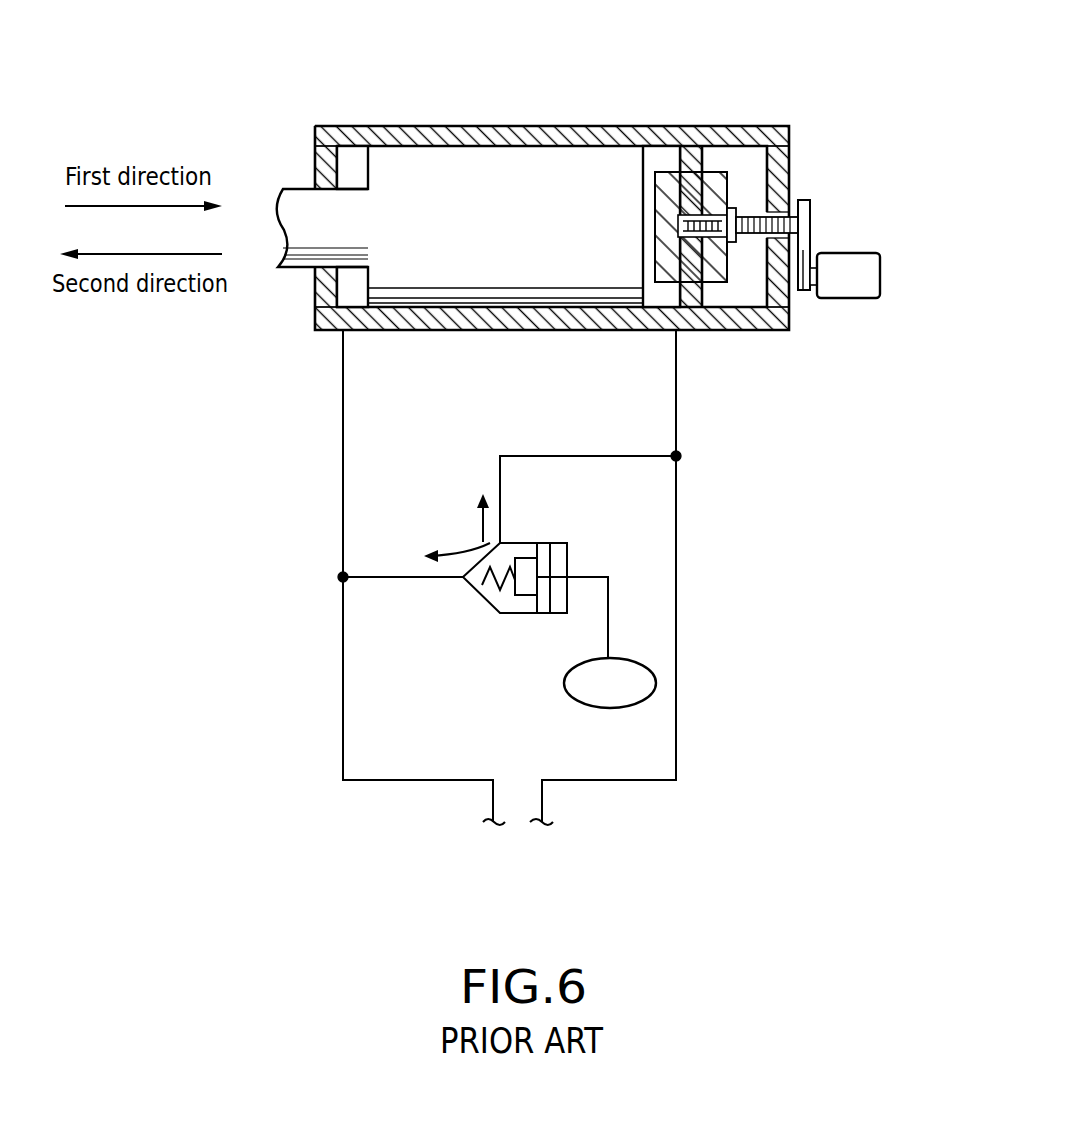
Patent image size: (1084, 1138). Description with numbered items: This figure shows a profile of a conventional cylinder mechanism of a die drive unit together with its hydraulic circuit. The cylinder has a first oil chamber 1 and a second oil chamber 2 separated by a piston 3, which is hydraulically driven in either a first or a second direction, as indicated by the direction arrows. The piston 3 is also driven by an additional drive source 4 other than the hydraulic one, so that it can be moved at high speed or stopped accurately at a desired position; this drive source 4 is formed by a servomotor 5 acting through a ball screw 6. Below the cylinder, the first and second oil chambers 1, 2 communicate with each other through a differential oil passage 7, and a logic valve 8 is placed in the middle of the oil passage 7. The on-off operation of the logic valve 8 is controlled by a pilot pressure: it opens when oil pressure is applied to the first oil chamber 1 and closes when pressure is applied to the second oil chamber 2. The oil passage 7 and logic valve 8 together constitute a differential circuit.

The first oil chamber 1 is at (352, 148).
The second oil chamber 2 is at (661, 155).
The piston 3 is at (527, 193).
The additional drive source 4 is at (840, 227).
The servomotor 5 is at (880, 272).
The ball screw 6 is at (752, 214).
The differential oil passage 7 is at (384, 577).
The logic valve 8 is at (517, 613).